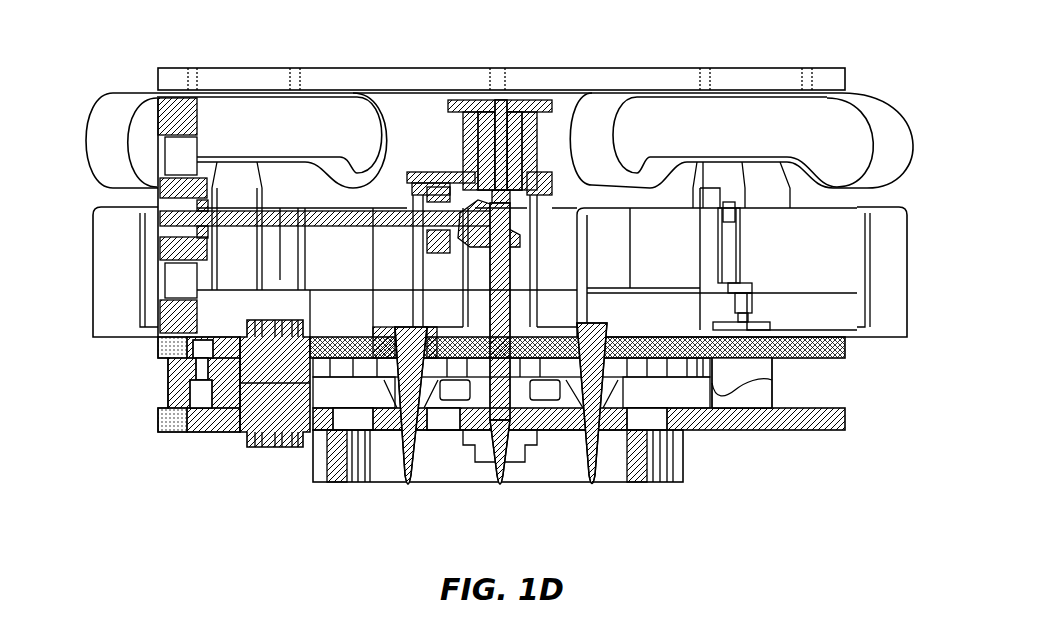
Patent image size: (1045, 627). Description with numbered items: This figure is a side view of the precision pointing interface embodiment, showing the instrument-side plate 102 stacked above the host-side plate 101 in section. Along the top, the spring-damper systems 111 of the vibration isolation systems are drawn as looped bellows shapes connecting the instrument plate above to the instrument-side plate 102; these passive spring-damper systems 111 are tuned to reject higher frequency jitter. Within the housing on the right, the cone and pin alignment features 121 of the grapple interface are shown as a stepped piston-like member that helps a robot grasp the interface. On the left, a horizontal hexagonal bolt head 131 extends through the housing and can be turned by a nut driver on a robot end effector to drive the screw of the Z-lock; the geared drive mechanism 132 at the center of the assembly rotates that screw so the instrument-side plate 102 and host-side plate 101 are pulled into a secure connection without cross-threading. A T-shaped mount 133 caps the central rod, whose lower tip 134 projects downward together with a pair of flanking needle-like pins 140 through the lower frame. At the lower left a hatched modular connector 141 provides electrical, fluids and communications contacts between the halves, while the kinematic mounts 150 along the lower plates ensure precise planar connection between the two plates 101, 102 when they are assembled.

The host-side plate 101 is at (155, 421).
The instrument-side plate 102 is at (153, 347).
The passive spring-damper system 111 is at (885, 115).
The cone and pin alignment features 121 is at (733, 255).
The hexagonal bolt head 131 is at (167, 215).
The geared drive mechanism 132 is at (473, 215).
The upper T-shaped mount 133 is at (500, 150).
The central needle tip 134 is at (508, 468).
The side needles 140 is at (407, 492).
The modular connector 141 is at (265, 447).
The kinematic mounts 150 is at (740, 405).